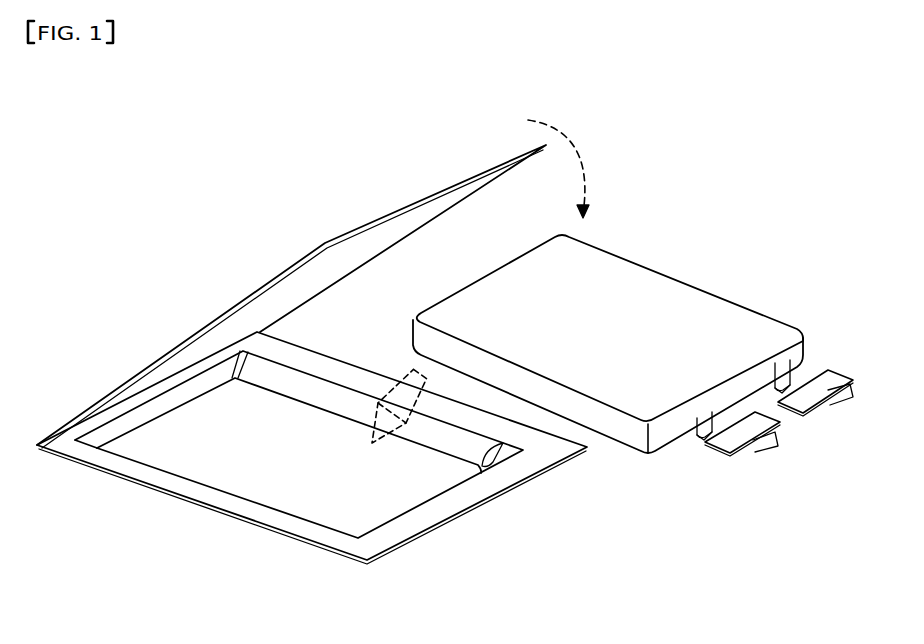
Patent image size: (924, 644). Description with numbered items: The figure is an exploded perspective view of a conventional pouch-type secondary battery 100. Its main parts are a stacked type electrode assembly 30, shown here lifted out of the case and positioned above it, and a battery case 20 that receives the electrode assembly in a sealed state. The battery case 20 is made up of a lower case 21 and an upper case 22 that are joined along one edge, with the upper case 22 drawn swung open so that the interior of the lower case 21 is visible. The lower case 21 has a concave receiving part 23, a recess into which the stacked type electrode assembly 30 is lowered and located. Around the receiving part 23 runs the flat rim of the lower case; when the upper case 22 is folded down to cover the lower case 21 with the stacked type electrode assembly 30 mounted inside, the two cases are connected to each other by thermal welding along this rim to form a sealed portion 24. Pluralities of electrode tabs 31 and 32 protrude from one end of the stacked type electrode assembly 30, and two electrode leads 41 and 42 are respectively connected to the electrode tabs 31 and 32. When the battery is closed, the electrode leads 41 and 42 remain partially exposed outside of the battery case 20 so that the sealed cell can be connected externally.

The pouch-type secondary battery 100 is at (88, 156).
The battery case 20 is at (138, 333).
The lower case 21 is at (228, 517).
The upper case 22 is at (313, 278).
The concave receiving part 23 is at (182, 460).
The sealed portion 24 is at (453, 505).
The stacked type electrode assembly 30 is at (672, 307).
The electrode tab 31 is at (786, 375).
The electrode tab 32 is at (712, 415).
The electrode lead 41 is at (853, 398).
The electrode lead 42 is at (775, 442).